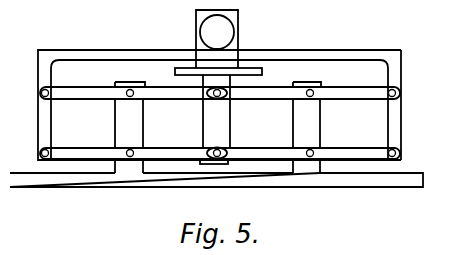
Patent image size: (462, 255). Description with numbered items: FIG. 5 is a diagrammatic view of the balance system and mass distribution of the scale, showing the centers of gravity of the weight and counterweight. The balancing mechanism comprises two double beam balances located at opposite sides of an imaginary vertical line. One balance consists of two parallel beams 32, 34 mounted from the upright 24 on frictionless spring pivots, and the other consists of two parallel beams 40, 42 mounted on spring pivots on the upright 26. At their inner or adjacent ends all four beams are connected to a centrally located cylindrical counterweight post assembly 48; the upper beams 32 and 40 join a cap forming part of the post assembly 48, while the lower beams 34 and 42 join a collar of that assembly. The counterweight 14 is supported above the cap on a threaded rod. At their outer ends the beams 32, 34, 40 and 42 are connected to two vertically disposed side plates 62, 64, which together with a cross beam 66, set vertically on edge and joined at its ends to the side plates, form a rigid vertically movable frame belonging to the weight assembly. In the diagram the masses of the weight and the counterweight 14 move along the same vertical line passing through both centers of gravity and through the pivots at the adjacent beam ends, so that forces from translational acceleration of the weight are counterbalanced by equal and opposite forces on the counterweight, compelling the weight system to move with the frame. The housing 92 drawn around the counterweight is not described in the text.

The counterweight 14 is at (221, 35).
The upright 24 is at (133, 130).
The upright 26 is at (294, 130).
The upper beam 32 is at (84, 94).
The lower beam 34 is at (95, 155).
The upper beam 40 is at (353, 97).
The lower beam 42 is at (352, 156).
The cylindrical counterweight post assembly 48 is at (233, 112).
The side plate 62 is at (42, 120).
The side plate 64 is at (400, 130).
The cross beam 66 is at (108, 52).
The roller housing 92 is at (195, 27).